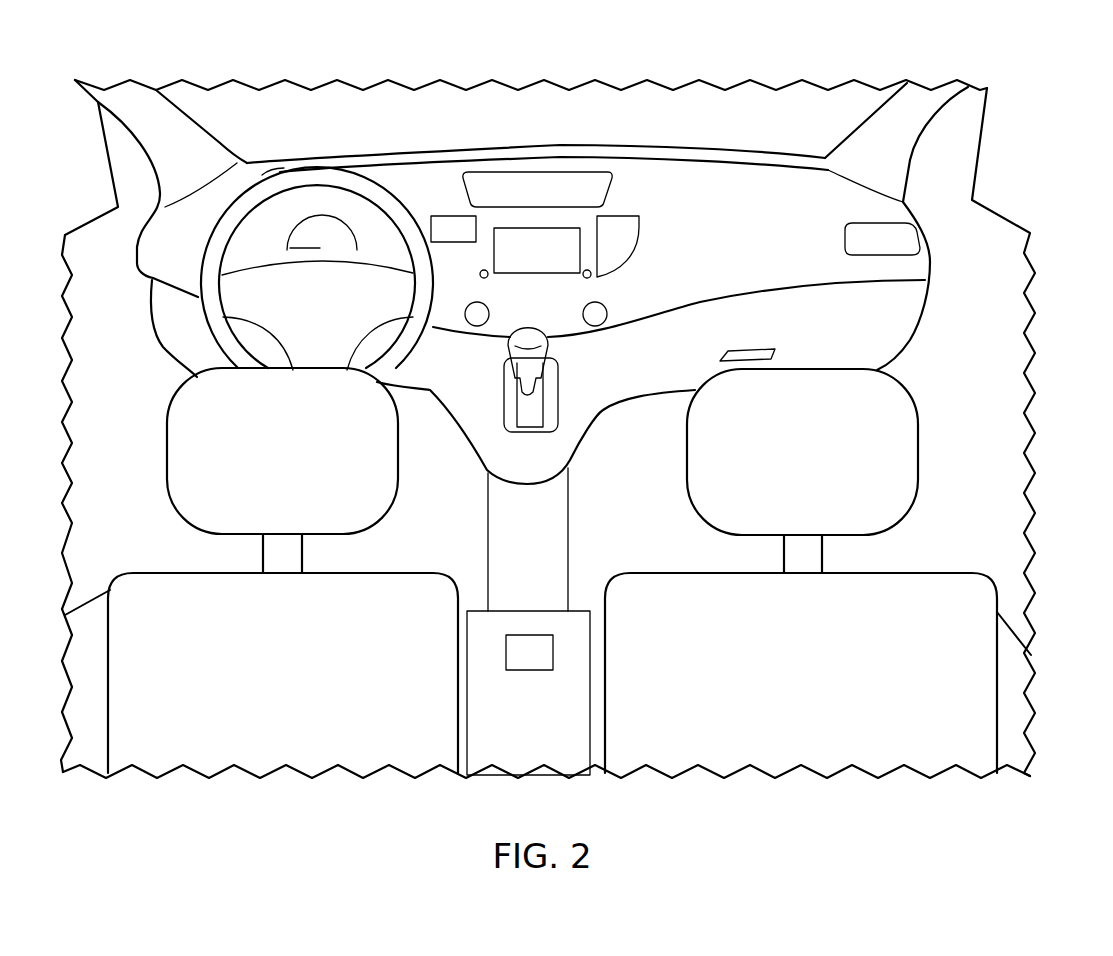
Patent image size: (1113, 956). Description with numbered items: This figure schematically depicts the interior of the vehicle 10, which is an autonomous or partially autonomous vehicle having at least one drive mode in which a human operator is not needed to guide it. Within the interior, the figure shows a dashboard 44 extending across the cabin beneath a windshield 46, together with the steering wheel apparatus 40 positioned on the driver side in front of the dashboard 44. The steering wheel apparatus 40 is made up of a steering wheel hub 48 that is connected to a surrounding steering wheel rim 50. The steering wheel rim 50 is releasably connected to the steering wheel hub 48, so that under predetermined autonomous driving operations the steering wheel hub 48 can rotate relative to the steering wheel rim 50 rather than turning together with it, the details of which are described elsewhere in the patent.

The vehicle 10 is at (1023, 93).
The steering wheel apparatus 40 is at (328, 137).
The dashboard 44 is at (759, 155).
The windshield 46 is at (492, 110).
The steering wheel hub 48 is at (375, 250).
The steering wheel rim 50 is at (277, 170).